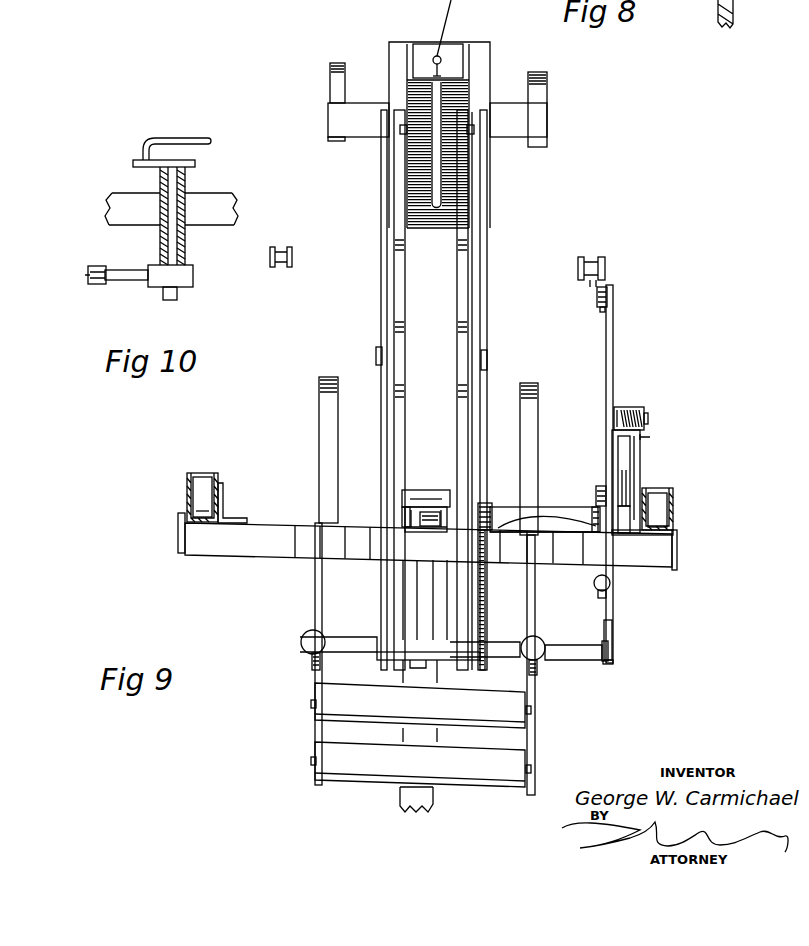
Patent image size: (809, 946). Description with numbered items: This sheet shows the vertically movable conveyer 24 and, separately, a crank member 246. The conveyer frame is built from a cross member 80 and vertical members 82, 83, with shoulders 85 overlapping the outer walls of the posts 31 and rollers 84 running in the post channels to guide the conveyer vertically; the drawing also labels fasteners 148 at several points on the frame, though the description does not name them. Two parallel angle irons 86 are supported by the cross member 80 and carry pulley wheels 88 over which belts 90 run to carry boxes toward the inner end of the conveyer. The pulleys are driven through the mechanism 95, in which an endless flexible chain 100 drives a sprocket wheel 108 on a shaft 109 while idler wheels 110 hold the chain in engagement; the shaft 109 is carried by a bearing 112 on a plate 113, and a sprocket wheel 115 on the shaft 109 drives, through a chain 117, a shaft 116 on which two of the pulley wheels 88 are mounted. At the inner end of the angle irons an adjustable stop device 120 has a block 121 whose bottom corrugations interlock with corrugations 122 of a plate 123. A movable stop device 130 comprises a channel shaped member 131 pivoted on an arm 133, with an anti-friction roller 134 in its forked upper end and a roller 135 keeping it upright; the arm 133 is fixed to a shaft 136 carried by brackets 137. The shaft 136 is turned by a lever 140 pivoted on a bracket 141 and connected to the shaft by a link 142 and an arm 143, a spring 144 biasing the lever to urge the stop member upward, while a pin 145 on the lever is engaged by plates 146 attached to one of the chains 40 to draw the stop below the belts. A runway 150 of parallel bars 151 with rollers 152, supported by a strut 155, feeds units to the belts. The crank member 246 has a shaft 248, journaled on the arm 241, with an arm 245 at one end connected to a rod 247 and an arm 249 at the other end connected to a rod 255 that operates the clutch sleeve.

In FIG. 9, the conveyer 24 is at (480, 824).
In FIG. 9, the post 31 is at (188, 495).
In FIG. 9, the chain 40 is at (277, 268).
In FIG. 9, the cross member 80 is at (200, 538).
In FIG. 9, the vertical member 82 is at (223, 505).
In FIG. 9, the vertical member 83 is at (640, 537).
In FIG. 9, the roller 84 is at (207, 490).
In FIG. 9, the shoulder 85 is at (182, 535).
In FIG. 9, the angle iron 86 is at (393, 72).
In FIG. 9, the pulley wheel 88 is at (398, 243).
In FIG. 9, the belt 90 is at (390, 303).
In FIG. 9, the mechanism 95 is at (607, 496).
In FIG. 9, the endless flexible chain 100 is at (625, 500).
In FIG. 9, the sprocket wheel 108 is at (620, 498).
In FIG. 9, the shaft 109 is at (598, 528).
In FIG. 9, the idler wheel 110 is at (648, 438).
In FIG. 9, the bearing 112 is at (540, 503).
In FIG. 9, the plate 113 is at (542, 500).
In FIG. 9, the sprocket wheel 115 is at (485, 505).
In FIG. 9, the shaft 116 is at (408, 657).
In FIG. 9, the chain 117 is at (485, 600).
In FIG. 9, the adjustable stop device 120 is at (425, 53).
In FIG. 9, the block 121 is at (453, 52).
In FIG. 9, the corrugations 122 is at (413, 145).
In FIG. 9, the plate 123 is at (412, 172).
In FIG. 9, the movable stop device 130 is at (403, 507).
In FIG. 9, the channel shaped member 131 is at (374, 511).
In FIG. 9, the arm 133 is at (420, 595).
In FIG. 9, the anti-friction roller 134 is at (433, 518).
In FIG. 9, the roller 135 is at (425, 493).
In FIG. 9, the shaft 136 is at (570, 652).
In FIG. 9, the bracket 137 is at (315, 587).
In FIG. 9, the lever 140 is at (612, 325).
In FIG. 9, the bracket 141 is at (622, 527).
In FIG. 9, the link 142 is at (595, 575).
In FIG. 9, the arm 143 is at (612, 632).
In FIG. 9, the spring 144 is at (620, 410).
In FIG. 9, the pin 145 is at (598, 295).
In FIG. 9, the plate 146 is at (605, 285).
In FIG. 9, the bolt 148 is at (332, 85).
In FIG. 9, the runway 150 is at (311, 739).
In FIG. 9, the bar 151 is at (313, 693).
In FIG. 9, the roller 152 is at (505, 768).
In FIG. 9, the strut 155 is at (410, 788).
In FIG. 10, the arm 241 is at (213, 208).
In FIG. 10, the arm 245 is at (133, 162).
In FIG. 10, the crank member 246 is at (173, 292).
In FIG. 10, the rod 247 is at (185, 142).
In FIG. 10, the shaft 248 is at (172, 238).
In FIG. 10, the arm 249 is at (187, 277).
In FIG. 10, the rod 255 is at (88, 268).